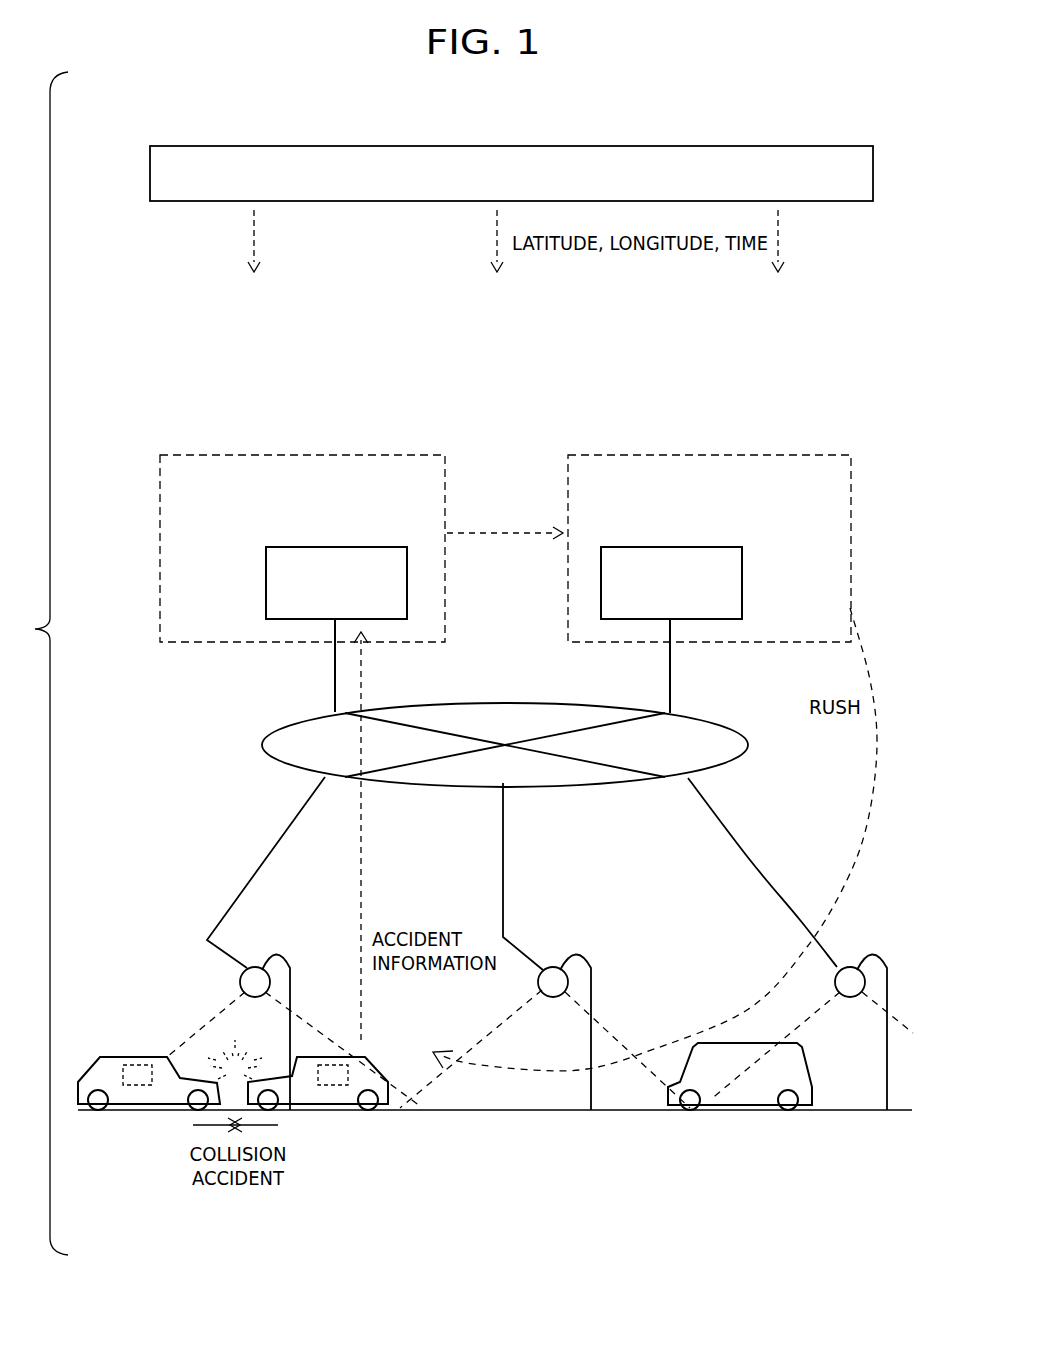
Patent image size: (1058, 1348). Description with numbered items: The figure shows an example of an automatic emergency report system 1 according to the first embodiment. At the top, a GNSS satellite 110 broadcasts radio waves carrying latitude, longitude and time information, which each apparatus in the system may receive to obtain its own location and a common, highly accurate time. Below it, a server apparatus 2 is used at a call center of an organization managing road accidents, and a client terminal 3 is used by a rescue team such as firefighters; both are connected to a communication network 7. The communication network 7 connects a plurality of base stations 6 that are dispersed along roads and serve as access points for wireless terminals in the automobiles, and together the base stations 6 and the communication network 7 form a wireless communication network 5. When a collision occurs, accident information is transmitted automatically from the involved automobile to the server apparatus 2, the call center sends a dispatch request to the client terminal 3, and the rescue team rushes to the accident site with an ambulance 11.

The GNSS satellite 110 is at (681, 146).
The automatic emergency report system 1 is at (511, 447).
The server apparatus 2 is at (407, 585).
The client terminal 3 is at (742, 585).
The wireless communication network 5 is at (197, 695).
The base station 6 is at (255, 966).
The communication network 7 is at (748, 747).
The ambulance 11 is at (767, 1105).